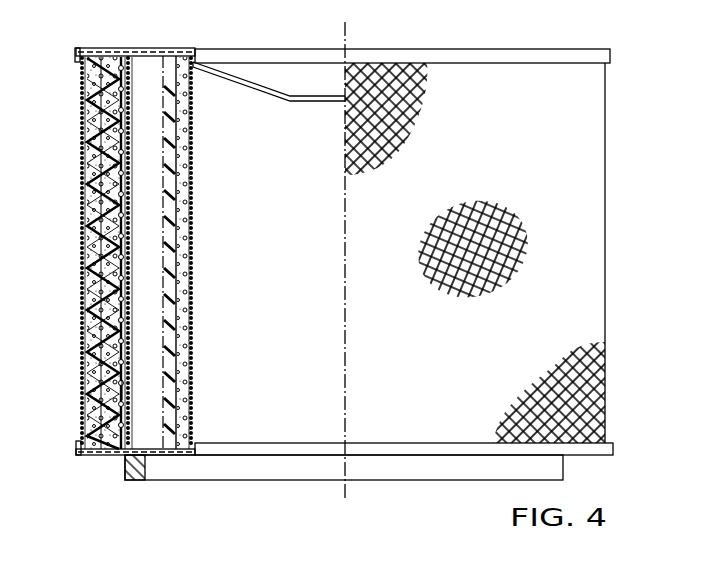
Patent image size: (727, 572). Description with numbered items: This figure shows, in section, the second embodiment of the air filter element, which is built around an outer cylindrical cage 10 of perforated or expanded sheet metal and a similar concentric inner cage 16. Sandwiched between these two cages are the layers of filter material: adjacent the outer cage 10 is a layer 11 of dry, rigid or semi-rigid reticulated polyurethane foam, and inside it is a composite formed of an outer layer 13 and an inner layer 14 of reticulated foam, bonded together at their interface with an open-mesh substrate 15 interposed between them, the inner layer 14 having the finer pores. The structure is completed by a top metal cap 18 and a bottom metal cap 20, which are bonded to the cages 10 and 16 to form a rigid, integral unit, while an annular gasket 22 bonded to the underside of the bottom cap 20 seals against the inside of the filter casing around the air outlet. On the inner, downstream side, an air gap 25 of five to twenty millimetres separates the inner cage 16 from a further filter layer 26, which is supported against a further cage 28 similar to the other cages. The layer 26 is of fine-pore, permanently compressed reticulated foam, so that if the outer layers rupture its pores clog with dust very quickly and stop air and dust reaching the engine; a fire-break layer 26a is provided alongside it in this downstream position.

The outer cylindrical cage 10 is at (142, 253).
The layer of dry reticulated foam plastics material 11 is at (90, 130).
The outer layer of reticulated foam plastics 13 is at (100, 262).
The inner layer of reticulated foam plastics 14 is at (122, 266).
The open-mesh substrate 15 is at (127, 313).
The inner cage 16 is at (132, 390).
The top metal cap 18 is at (247, 82).
The bottom metal cap 20 is at (178, 456).
The annular gasket 22 is at (130, 482).
The air gap 25 is at (148, 147).
The further filter layer 26 is at (191, 207).
The fire-break layer 26a is at (168, 412).
The further cage 28 is at (191, 238).